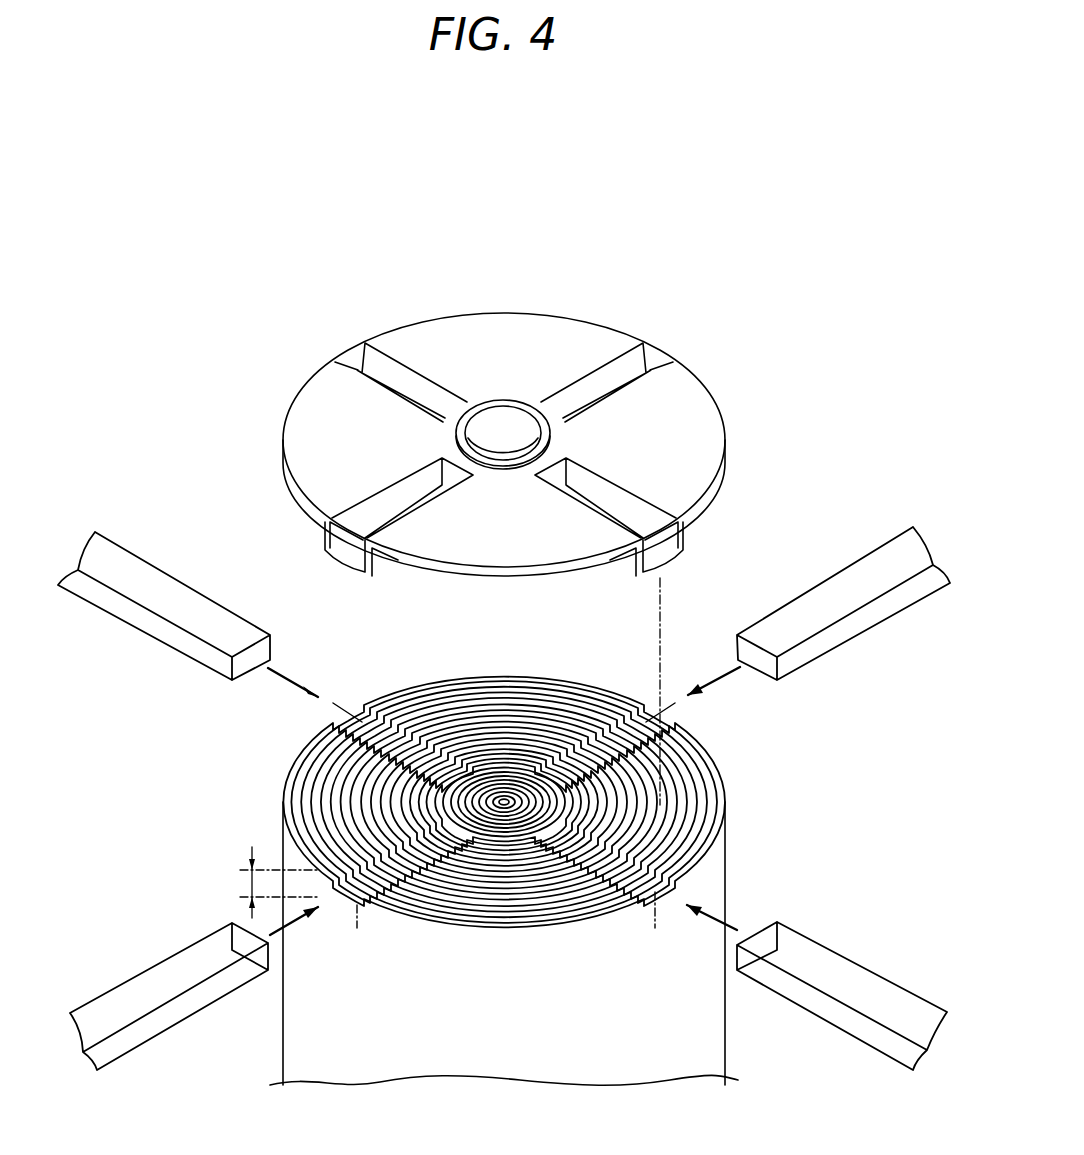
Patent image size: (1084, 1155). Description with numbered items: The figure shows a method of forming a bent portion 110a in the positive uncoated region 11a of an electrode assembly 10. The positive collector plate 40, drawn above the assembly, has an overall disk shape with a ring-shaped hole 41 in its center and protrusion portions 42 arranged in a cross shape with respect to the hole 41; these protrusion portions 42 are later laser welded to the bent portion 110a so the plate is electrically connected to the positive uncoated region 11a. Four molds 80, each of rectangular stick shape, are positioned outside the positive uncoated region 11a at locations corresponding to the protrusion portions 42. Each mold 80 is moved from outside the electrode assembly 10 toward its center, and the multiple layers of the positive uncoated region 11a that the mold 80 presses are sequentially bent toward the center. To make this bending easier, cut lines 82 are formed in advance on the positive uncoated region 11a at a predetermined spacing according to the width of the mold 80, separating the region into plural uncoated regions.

The electrode assembly 10 is at (550, 852).
The positive uncoated region 11a is at (577, 932).
The bent portion 110a is at (372, 717).
The positive collector plate 40 is at (520, 456).
The hole 41 is at (477, 427).
The protrusion portions 42 is at (363, 573).
The mold 80 is at (147, 622).
The cut line 82 is at (418, 723).